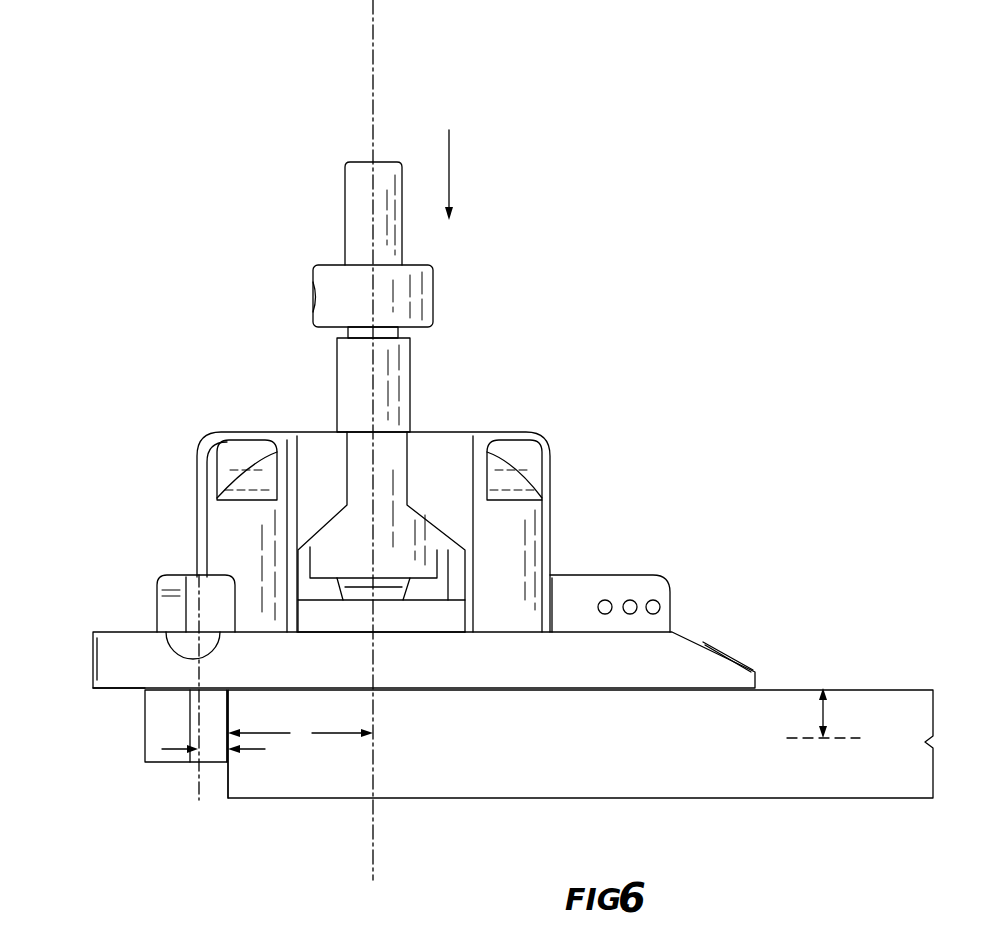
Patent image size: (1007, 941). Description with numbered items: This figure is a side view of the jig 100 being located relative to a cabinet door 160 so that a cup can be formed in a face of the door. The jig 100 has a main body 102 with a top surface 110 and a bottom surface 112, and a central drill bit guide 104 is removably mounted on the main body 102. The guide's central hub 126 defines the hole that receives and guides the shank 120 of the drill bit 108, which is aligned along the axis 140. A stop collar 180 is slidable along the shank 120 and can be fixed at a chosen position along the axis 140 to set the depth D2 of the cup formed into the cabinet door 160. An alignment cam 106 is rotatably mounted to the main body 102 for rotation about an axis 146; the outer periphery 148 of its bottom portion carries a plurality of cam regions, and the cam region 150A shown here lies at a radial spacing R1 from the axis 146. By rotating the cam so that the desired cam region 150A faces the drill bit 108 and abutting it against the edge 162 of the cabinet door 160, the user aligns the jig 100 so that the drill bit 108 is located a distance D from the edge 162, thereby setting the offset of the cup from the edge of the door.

The jig 100 is at (138, 298).
The main body 102 is at (673, 655).
The central drill bit guide 104 is at (540, 523).
The alignment cam 106 is at (160, 578).
The drill bit 108 is at (392, 386).
The top surface 110 is at (100, 630).
The bottom surface 112 is at (123, 691).
The shank 120 is at (348, 206).
The central hub 126 is at (385, 467).
The axis 140 is at (373, 77).
The axis 146 is at (197, 781).
The outer periphery 148 is at (143, 715).
The cam region 150A is at (230, 720).
The cabinet door 160 is at (482, 782).
The edge 162 is at (227, 786).
The stop collar 180 is at (420, 291).
The distance D is at (300, 733).
The radial spacing R1 is at (250, 752).
The depth D2 is at (828, 714).